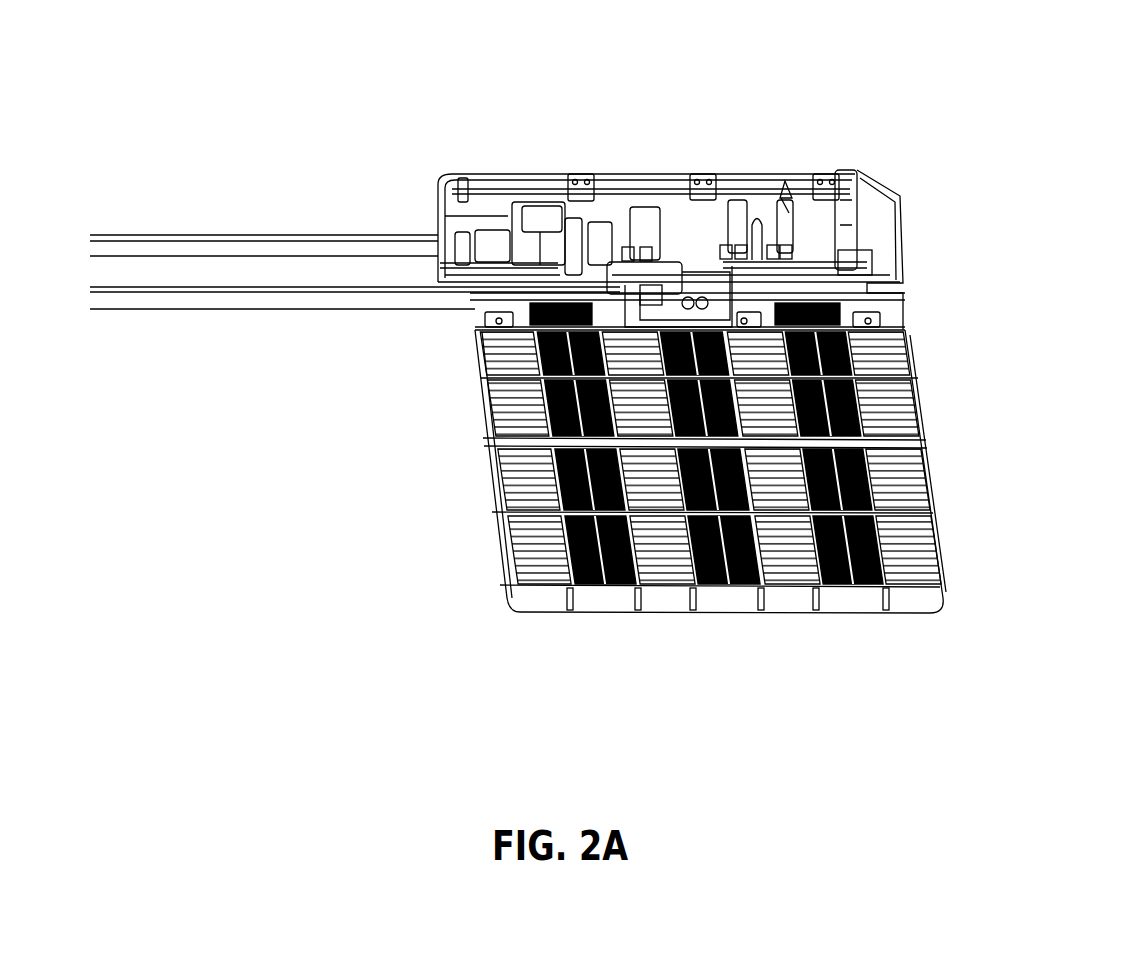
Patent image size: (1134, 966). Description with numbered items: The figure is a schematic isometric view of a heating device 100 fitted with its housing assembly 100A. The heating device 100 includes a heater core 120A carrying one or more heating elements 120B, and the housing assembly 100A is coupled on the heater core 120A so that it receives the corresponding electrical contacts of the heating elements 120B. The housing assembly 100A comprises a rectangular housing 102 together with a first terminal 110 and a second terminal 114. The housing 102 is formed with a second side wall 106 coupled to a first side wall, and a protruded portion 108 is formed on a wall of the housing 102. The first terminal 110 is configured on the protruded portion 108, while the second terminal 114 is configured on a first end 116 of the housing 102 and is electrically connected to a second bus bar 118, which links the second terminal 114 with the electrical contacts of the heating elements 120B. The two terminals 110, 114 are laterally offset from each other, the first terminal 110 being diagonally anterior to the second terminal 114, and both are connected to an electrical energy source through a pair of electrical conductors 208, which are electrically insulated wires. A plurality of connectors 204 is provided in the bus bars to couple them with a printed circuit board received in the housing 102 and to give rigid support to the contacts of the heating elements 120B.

The heating device 100 is at (788, 687).
The housing assembly 100A is at (533, 152).
The housing 102 is at (882, 245).
The second side wall 106 is at (758, 185).
The protruded portion 108 is at (715, 303).
The first terminal 110 is at (690, 322).
The second terminal 114 is at (508, 237).
The first end 116 is at (441, 165).
The second bus bar 118 is at (686, 176).
The heater core 120A is at (528, 577).
The heating elements 120B is at (728, 585).
The connectors 204 is at (572, 172).
The electrical conductors 208 is at (223, 245).